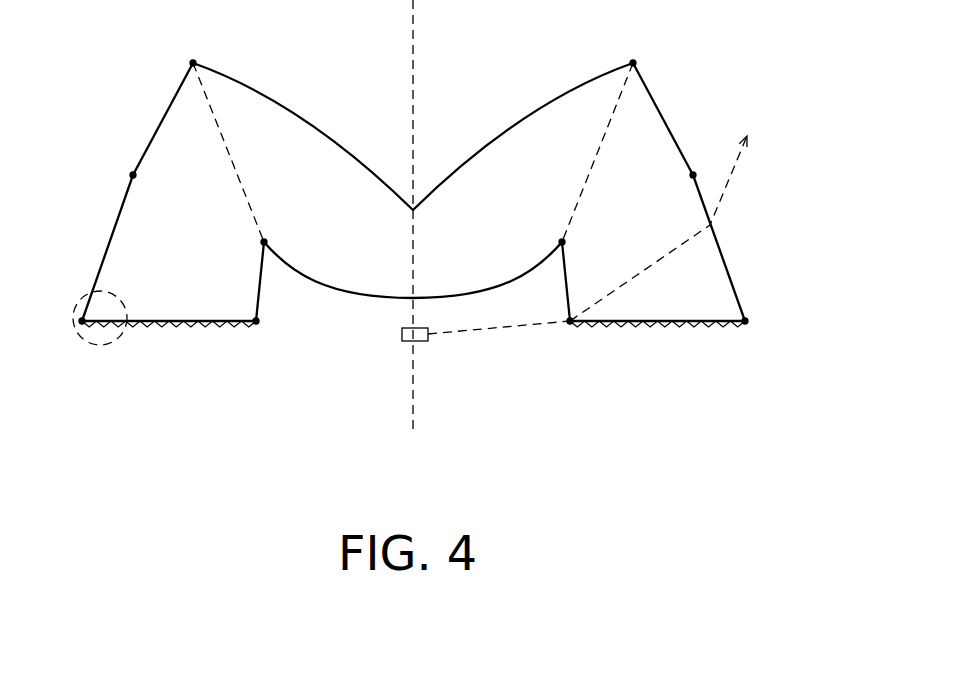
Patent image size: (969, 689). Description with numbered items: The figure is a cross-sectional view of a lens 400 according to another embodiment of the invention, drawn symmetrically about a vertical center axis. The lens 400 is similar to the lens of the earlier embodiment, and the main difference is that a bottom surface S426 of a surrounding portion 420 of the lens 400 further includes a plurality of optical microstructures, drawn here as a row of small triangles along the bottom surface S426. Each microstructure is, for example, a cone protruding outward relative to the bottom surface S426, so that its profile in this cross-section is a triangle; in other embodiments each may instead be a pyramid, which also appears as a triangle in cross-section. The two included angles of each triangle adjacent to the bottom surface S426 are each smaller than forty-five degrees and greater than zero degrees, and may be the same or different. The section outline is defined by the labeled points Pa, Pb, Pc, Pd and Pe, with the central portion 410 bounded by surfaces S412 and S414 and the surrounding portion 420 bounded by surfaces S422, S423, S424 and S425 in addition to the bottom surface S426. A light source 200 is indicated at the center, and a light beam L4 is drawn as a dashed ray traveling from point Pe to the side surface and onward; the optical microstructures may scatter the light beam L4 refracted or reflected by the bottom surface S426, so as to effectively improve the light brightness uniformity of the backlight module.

The lens 400 is at (452, 244).
The first light guide portion 410 is at (413, 219).
The surrounding portion 420 is at (170, 143).
The light emitting element 200 is at (402, 334).
The light incident surface S412 is at (332, 292).
The light exit surface S414 is at (330, 140).
The side light incident surface S422 is at (567, 280).
The first reflecting surface S423 is at (647, 85).
The reflecting surface S424 is at (748, 163).
The second reflecting surface S425 is at (731, 280).
The bottom surface S426 is at (710, 323).
The light beam L4 is at (728, 185).
The point Pa is at (414, 223).
The point Pb is at (415, 45).
The point Pc is at (408, 163).
The point Pd is at (416, 342).
The point Pe is at (417, 343).